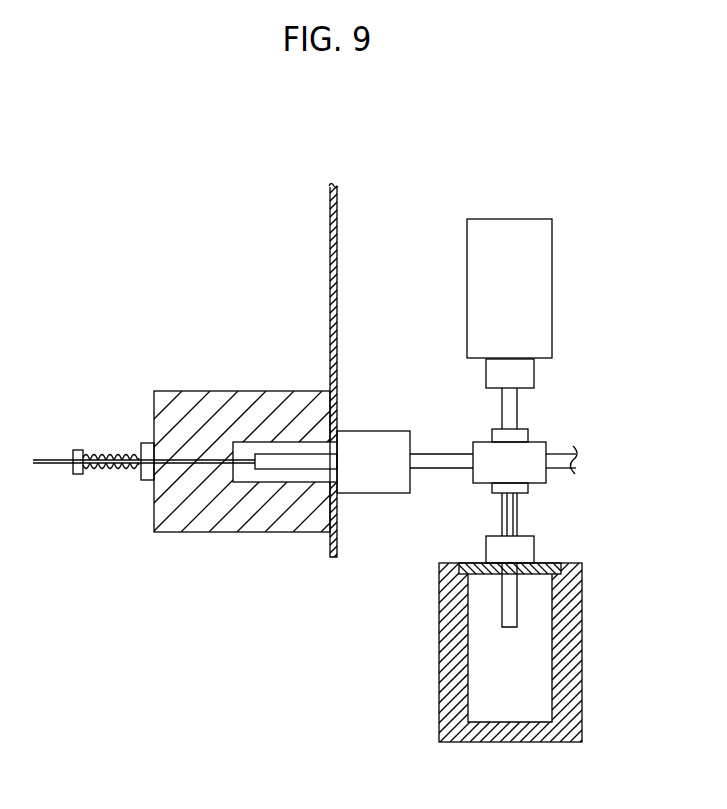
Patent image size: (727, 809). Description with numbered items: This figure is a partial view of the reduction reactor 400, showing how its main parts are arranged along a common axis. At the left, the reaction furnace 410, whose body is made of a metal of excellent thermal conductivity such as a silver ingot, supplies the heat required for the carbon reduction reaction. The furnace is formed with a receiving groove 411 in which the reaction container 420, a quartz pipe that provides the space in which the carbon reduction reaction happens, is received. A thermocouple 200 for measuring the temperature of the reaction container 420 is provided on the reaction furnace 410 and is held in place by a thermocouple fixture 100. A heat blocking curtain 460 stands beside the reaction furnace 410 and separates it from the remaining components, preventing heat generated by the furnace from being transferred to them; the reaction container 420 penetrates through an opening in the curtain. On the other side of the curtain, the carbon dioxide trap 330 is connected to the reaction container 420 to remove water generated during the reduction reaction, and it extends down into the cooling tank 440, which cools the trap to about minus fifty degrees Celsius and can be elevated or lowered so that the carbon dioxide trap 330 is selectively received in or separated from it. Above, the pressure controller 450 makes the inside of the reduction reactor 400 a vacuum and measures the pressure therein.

The thermocouple fixture 100 is at (86, 410).
The thermocouple 200 is at (44, 459).
The carbon dioxide trap 330 is at (510, 598).
The reduction reactor 400 is at (394, 215).
The reaction furnace 410 is at (213, 402).
The receiving groove 411 is at (246, 444).
The reaction container 420 is at (306, 466).
The cooling tank 440 is at (454, 668).
The pressure controller 450 is at (510, 246).
The heat blocking curtain 460 is at (330, 198).